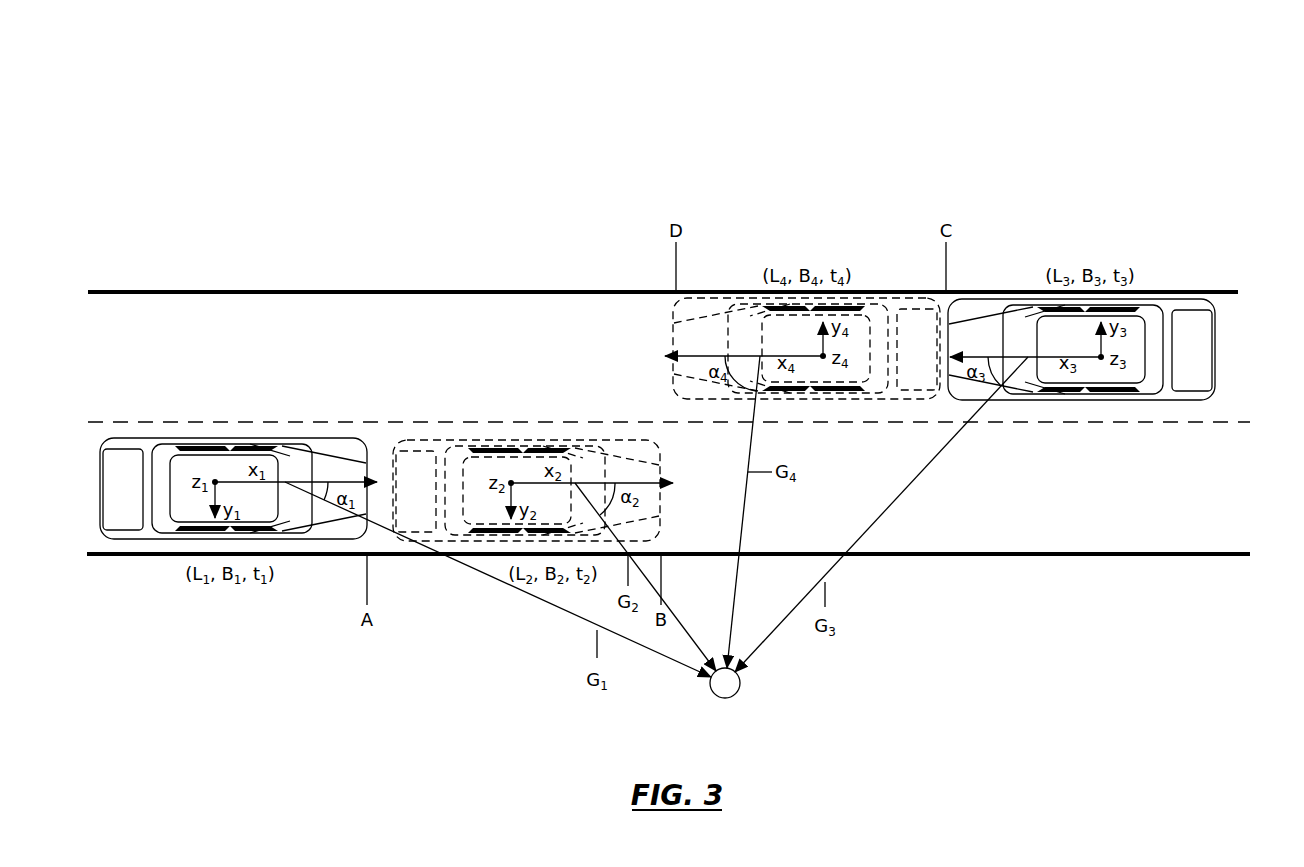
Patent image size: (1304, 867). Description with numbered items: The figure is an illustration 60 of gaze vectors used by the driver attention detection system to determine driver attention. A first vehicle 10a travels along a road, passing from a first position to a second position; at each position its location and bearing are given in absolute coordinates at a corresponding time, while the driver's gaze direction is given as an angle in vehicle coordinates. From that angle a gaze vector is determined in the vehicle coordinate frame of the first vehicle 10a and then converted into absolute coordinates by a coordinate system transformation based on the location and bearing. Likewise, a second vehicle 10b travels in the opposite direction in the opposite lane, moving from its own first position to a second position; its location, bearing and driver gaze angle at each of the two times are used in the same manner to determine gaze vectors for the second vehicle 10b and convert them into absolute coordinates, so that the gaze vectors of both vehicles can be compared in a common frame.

The traffic situation / environment model 60 is at (816, 110).
The first vehicle 10a is at (140, 440).
The second vehicle 10b is at (1216, 350).